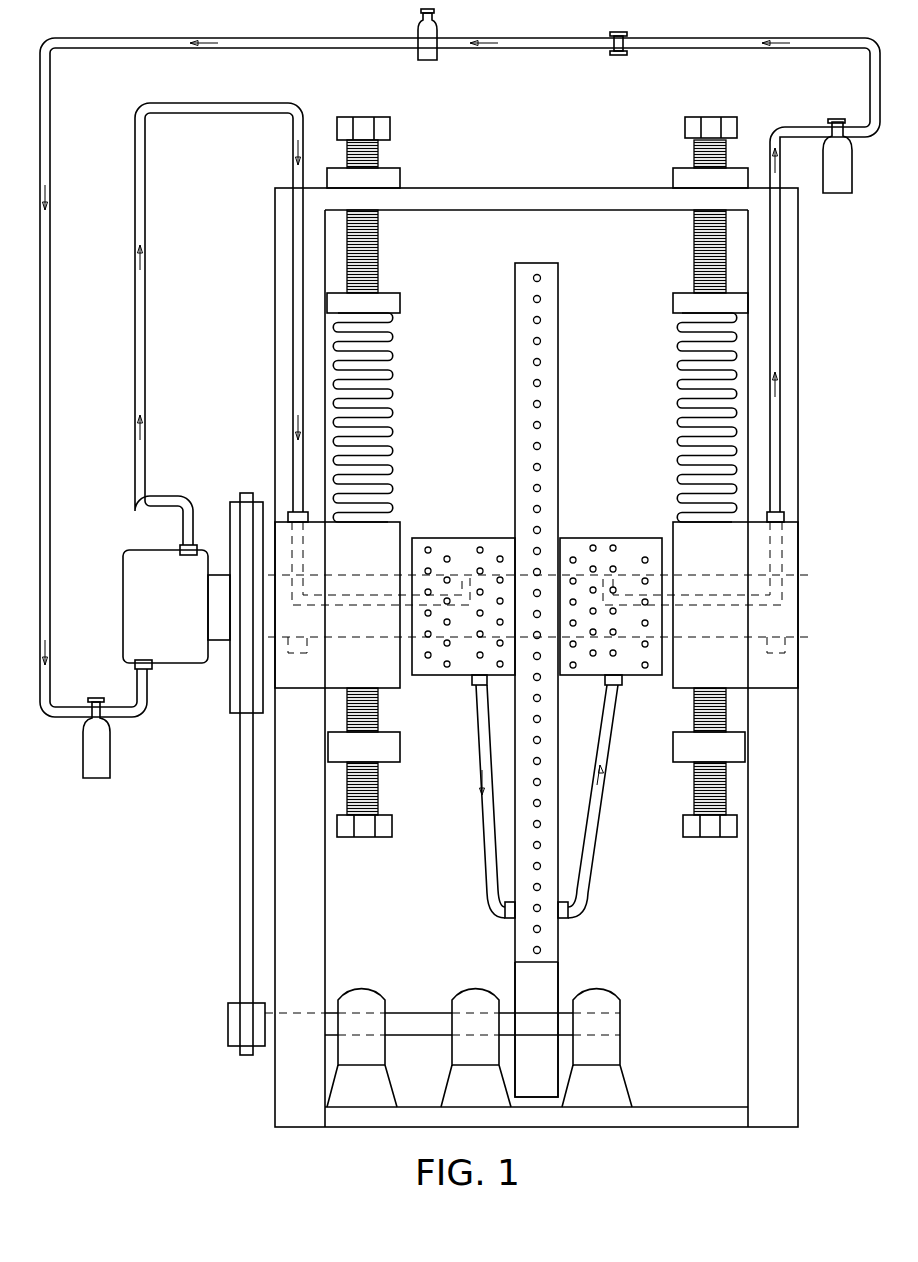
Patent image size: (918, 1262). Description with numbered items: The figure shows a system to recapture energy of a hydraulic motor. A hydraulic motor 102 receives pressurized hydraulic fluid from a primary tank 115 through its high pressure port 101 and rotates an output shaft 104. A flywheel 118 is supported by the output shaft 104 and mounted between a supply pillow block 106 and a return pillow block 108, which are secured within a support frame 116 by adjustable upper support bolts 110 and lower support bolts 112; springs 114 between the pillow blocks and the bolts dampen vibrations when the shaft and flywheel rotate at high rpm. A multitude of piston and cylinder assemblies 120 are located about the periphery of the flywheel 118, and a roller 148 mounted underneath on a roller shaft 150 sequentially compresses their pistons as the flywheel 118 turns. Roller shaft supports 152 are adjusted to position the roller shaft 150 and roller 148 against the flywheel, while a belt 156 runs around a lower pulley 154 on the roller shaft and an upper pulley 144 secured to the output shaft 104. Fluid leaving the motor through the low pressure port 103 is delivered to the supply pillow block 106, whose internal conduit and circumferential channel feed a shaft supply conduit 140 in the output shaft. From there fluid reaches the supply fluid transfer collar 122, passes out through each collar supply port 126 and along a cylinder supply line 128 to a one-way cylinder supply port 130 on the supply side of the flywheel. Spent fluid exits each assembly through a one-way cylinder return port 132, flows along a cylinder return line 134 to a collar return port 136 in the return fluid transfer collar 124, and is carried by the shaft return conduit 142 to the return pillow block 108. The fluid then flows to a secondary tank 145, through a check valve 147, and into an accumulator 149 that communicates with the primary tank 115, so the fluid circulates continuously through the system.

The high pressure port 101 is at (152, 669).
The hydraulic motor 102 is at (133, 549).
The low pressure port 103 is at (183, 544).
The output shaft 104 is at (229, 575).
The supply pillow block 106 is at (398, 522).
The return pillow block 108 is at (788, 548).
The upper support bolts 110 is at (362, 117).
The lower support bolts 112 is at (362, 838).
The springs 114 is at (391, 380).
The primary tank 115 is at (97, 778).
The support frame 116 is at (292, 300).
The flywheel 118 is at (537, 263).
The piston and cylinder assemblies 120 is at (544, 424).
The supply fluid transfer collar 122 is at (460, 538).
The return fluid transfer collar 124 is at (612, 538).
The collar supply port 126 is at (470, 690).
The cylinder supply line 128 is at (488, 862).
The cylinder supply port 130 is at (506, 920).
The cylinder return port 132 is at (570, 918).
The cylinder return line 134 is at (597, 843).
The collar return port 136 is at (620, 688).
The shaft supply conduit 140 is at (381, 605).
The shaft return conduit 142 is at (795, 600).
The upper pulley 144 is at (245, 502).
The secondary tank 145 is at (845, 190).
The check valve 147 is at (617, 55).
The roller 148 is at (560, 990).
The accumulator 149 is at (432, 57).
The roller shaft 150 is at (418, 1012).
The roller shaft supports 152 is at (622, 1075).
The lower pulley 154 is at (228, 1023).
The belt 156 is at (240, 912).